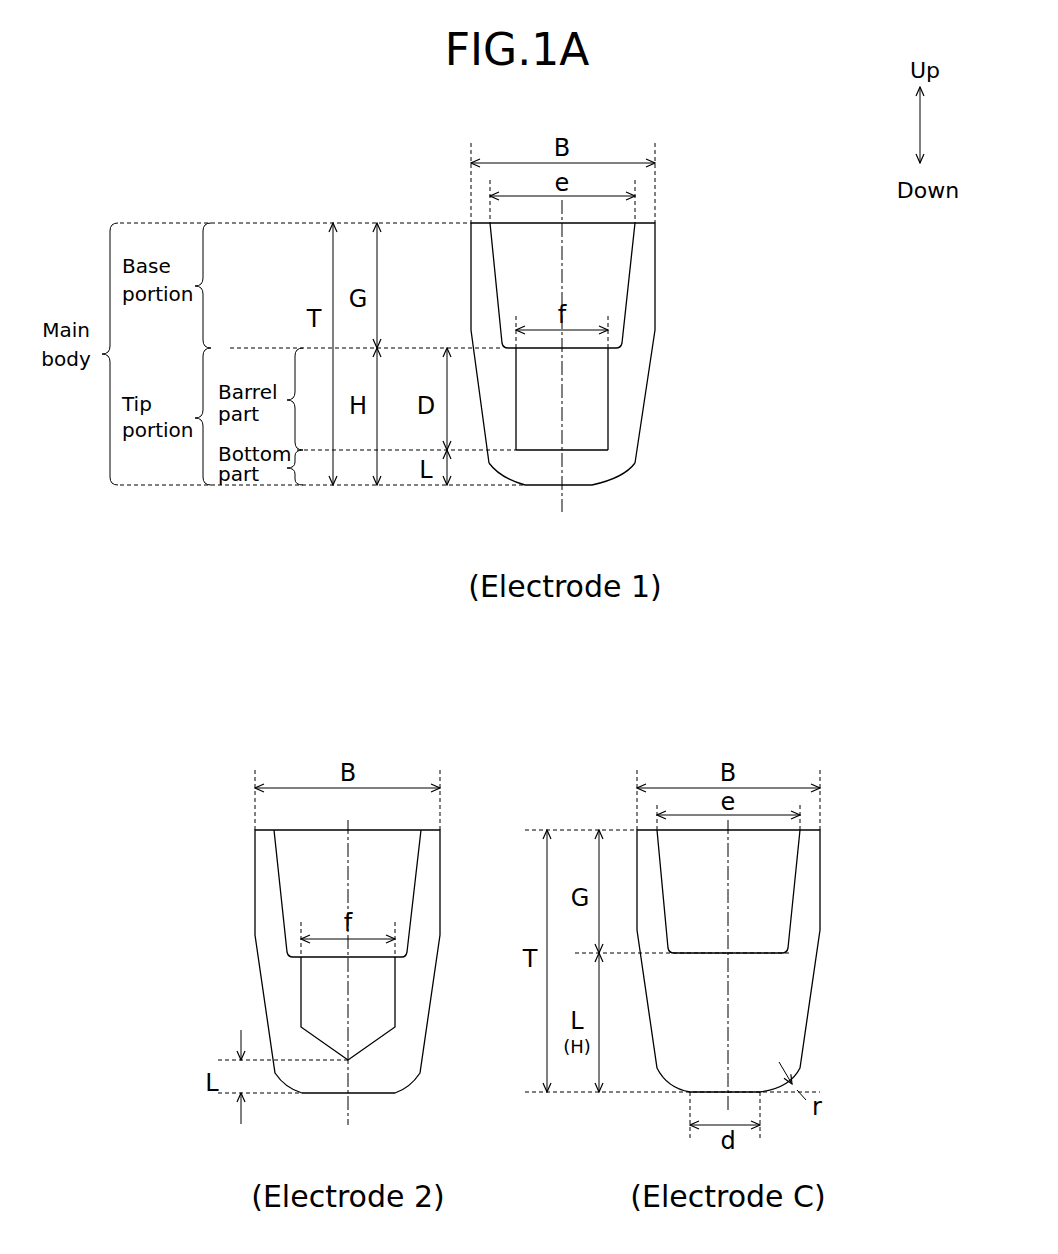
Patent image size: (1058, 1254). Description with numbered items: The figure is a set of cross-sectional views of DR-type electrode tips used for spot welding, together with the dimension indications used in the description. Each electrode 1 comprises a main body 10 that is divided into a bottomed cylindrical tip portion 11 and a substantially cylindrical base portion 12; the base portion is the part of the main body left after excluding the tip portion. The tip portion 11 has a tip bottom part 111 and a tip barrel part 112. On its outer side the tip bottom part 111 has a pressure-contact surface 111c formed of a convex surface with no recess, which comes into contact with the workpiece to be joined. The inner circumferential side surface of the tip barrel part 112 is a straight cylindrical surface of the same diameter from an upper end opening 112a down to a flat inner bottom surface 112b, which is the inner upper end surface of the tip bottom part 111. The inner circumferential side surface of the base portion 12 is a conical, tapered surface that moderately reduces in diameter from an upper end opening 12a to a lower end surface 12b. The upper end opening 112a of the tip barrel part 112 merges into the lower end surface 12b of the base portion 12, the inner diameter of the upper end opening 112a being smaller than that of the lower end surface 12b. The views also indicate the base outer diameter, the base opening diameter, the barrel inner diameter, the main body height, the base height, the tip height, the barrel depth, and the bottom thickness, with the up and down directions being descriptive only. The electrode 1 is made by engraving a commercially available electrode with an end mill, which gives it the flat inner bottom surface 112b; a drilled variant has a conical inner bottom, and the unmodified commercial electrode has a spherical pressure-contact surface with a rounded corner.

The electrode 1 is at (880, 586).
The main body 10 is at (713, 355).
The tip portion 11 is at (695, 436).
The base portion 12 is at (693, 259).
The upper end opening 12a is at (635, 223).
The lower end surface 12b is at (624, 332).
The tip bottom part 111 is at (588, 473).
The pressure-contact surface 111c is at (567, 487).
The tip barrel part 112 is at (633, 393).
The upper end opening 112a is at (572, 349).
The inner bottom surface 112b is at (584, 448).